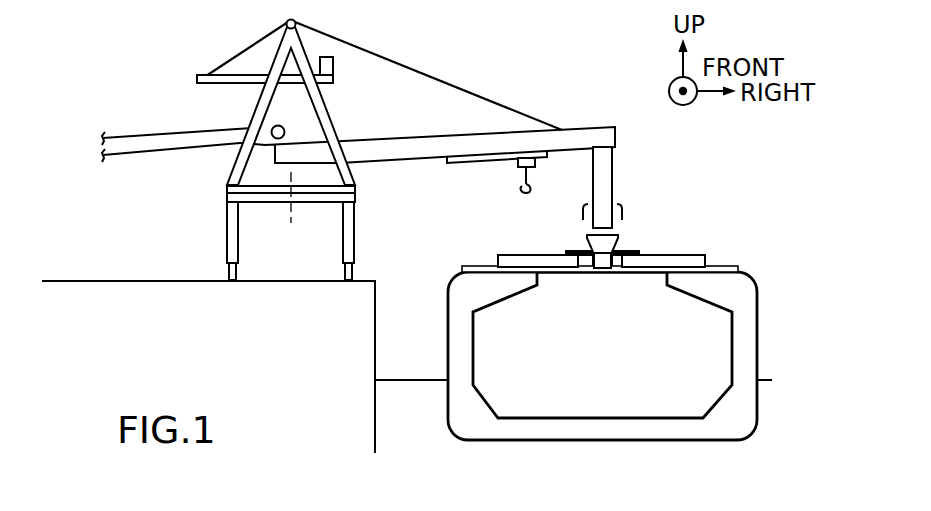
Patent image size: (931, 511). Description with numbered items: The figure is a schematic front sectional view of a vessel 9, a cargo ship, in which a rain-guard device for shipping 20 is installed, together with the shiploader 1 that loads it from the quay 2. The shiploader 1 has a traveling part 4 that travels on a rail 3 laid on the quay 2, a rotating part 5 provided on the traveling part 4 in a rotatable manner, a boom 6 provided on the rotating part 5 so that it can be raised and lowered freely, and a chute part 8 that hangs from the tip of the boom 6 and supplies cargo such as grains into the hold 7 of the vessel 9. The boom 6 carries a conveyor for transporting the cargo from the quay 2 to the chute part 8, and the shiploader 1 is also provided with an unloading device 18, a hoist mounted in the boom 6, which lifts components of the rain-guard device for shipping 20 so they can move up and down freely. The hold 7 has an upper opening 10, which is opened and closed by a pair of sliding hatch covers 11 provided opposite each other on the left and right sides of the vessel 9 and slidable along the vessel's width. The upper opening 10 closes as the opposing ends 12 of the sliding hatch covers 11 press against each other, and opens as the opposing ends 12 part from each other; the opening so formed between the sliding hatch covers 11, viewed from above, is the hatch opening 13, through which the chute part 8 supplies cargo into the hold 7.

The shiploader 1 is at (475, 55).
The quay 2 is at (133, 279).
The rail 3 is at (229, 277).
The traveling part 4 is at (226, 210).
The rotating part 5 is at (256, 104).
The boom 6 is at (570, 128).
The hold 7 is at (590, 405).
The chute part 8 is at (606, 160).
The vessel 9 is at (751, 250).
The upper opening 10 is at (612, 274).
The sliding hatch covers 11 is at (555, 262).
The opposing ends 12 is at (583, 260).
The hatch opening 13 is at (603, 274).
The unloading device 18 is at (517, 193).
The rain-guard device for shipping 20 is at (640, 233).